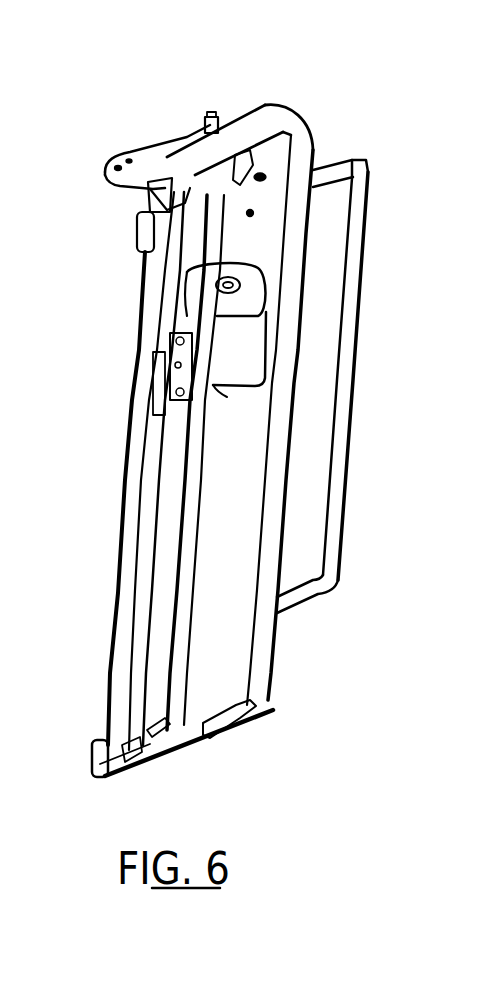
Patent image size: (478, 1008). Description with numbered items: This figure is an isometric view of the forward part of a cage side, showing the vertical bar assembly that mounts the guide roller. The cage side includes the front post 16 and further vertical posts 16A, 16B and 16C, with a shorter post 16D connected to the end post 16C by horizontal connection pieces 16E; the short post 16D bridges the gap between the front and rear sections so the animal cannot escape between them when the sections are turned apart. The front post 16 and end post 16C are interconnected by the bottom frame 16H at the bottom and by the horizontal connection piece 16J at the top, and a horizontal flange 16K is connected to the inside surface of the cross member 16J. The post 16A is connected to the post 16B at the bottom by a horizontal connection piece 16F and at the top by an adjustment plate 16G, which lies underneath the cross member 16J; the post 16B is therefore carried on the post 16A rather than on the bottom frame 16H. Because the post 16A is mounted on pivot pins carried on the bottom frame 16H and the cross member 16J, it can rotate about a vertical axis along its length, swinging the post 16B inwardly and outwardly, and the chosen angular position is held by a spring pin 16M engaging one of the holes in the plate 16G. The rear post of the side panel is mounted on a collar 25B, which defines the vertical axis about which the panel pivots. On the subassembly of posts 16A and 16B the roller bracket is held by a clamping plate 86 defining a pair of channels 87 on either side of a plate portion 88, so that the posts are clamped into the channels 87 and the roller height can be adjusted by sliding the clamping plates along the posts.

The front post 16 is at (123, 593).
The post 16A is at (157, 507).
The post 16B is at (203, 510).
The end post 16C is at (266, 541).
The short post 16D is at (353, 370).
The horizontal connection pieces 16E is at (333, 160).
The horizontal connection piece 16F is at (197, 730).
The adjustment plate 16G is at (117, 182).
The bottom frame 16H is at (215, 708).
The horizontal connection piece 16J is at (227, 147).
The horizontal flange 16K is at (190, 150).
The spring pin 16M is at (213, 117).
The collar 25B is at (92, 762).
The clamping plate 86 is at (167, 365).
The channels 87 is at (173, 348).
The plate portion 88 is at (227, 397).